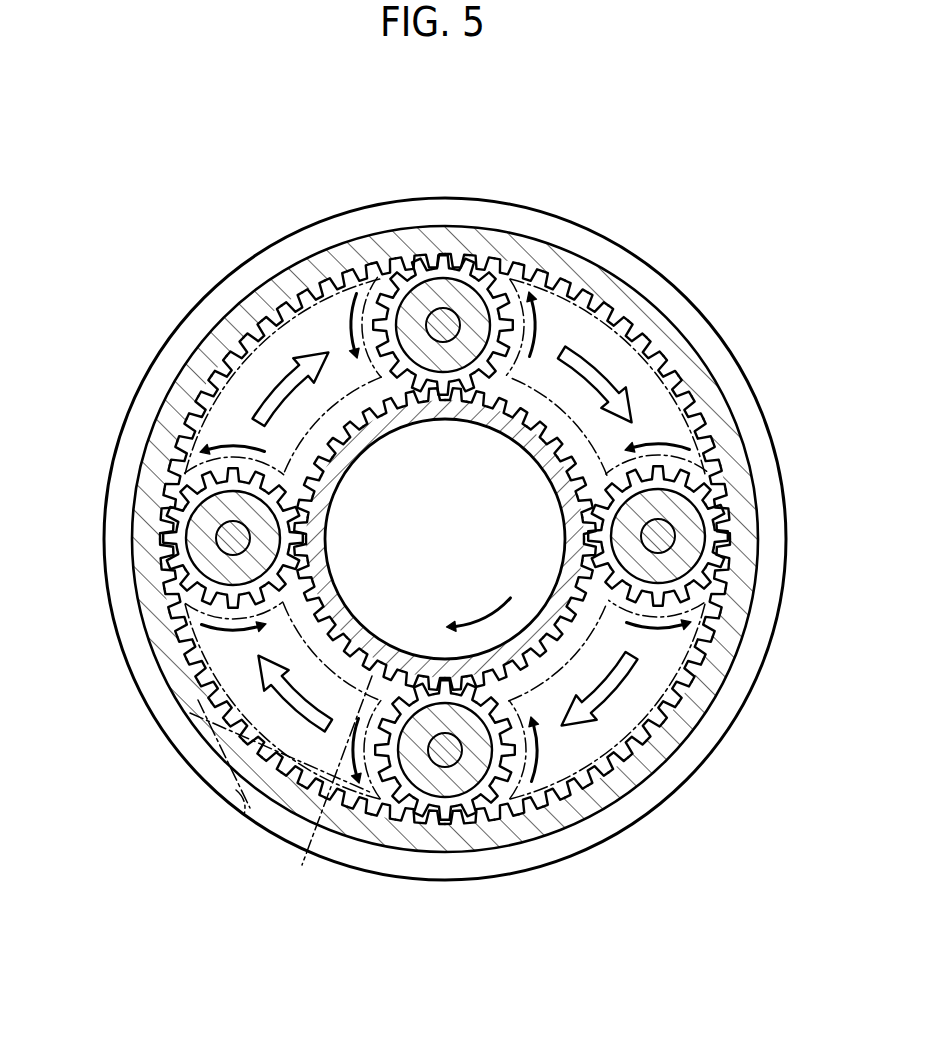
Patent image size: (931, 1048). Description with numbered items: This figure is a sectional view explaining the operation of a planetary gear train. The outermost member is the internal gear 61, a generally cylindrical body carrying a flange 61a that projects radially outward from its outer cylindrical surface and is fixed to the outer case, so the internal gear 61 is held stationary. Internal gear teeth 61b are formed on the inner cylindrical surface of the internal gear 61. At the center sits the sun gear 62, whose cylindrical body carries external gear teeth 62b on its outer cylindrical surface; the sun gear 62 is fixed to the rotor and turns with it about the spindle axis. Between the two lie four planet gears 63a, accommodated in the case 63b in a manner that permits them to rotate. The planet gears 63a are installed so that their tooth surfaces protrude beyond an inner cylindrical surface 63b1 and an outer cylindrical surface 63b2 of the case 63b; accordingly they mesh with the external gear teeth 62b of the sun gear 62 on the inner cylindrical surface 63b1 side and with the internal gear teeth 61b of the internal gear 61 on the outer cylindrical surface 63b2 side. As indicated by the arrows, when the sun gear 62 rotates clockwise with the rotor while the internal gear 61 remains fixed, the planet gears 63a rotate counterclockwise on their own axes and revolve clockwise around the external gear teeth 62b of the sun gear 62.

The internal gear 61 is at (445, 514).
The flange 61a is at (436, 199).
The internal gear teeth 61b is at (652, 348).
The sun gear 62 is at (445, 539).
The external gear teeth 62b is at (322, 638).
The planet gears 63a is at (377, 270).
The case 63b is at (409, 587).
The inner cylindrical surface 63b1 is at (325, 787).
The outer cylindrical surface 63b2 is at (246, 800).